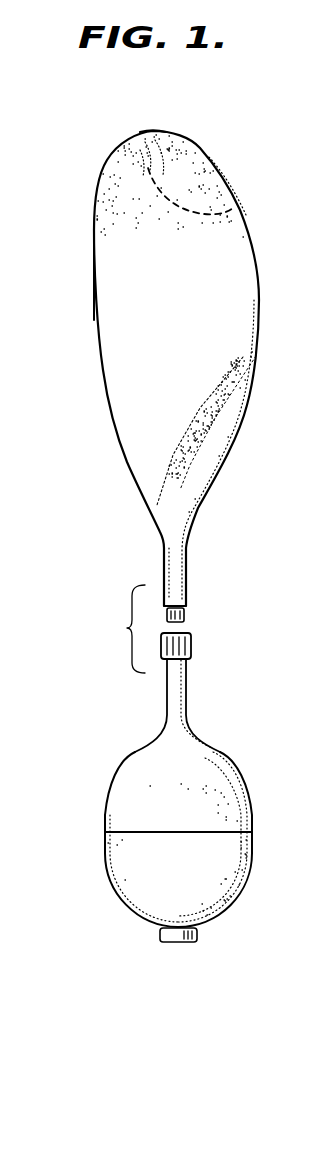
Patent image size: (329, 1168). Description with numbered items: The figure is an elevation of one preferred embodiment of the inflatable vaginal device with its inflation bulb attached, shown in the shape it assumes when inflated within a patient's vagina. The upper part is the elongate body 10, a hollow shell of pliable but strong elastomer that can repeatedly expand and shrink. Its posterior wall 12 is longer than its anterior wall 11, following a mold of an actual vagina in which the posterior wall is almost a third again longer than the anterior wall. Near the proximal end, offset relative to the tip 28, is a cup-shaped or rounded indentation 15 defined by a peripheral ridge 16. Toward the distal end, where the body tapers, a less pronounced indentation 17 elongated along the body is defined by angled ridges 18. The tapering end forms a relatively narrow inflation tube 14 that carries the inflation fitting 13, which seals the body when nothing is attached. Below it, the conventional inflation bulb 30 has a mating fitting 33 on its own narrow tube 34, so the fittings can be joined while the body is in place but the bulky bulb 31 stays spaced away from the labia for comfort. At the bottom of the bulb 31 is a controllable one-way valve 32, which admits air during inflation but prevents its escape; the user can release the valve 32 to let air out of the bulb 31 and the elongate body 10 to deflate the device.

The elongate body 10 is at (169, 377).
The anterior wall 11 is at (243, 290).
The posterior wall 12 is at (95, 277).
The inflation fitting 13 is at (184, 613).
The inflation tube 14 is at (175, 577).
The indentation 15 is at (192, 170).
The peripheral ridge 16 is at (232, 184).
The indentation 17 is at (209, 433).
The angled ridges 18 is at (247, 424).
The tip 28 is at (158, 131).
The inflation bulb 30 is at (177, 807).
The bulb 31 is at (218, 797).
The one-way valve 32 is at (187, 943).
The mating fitting 33 is at (191, 647).
The tube 34 is at (181, 696).